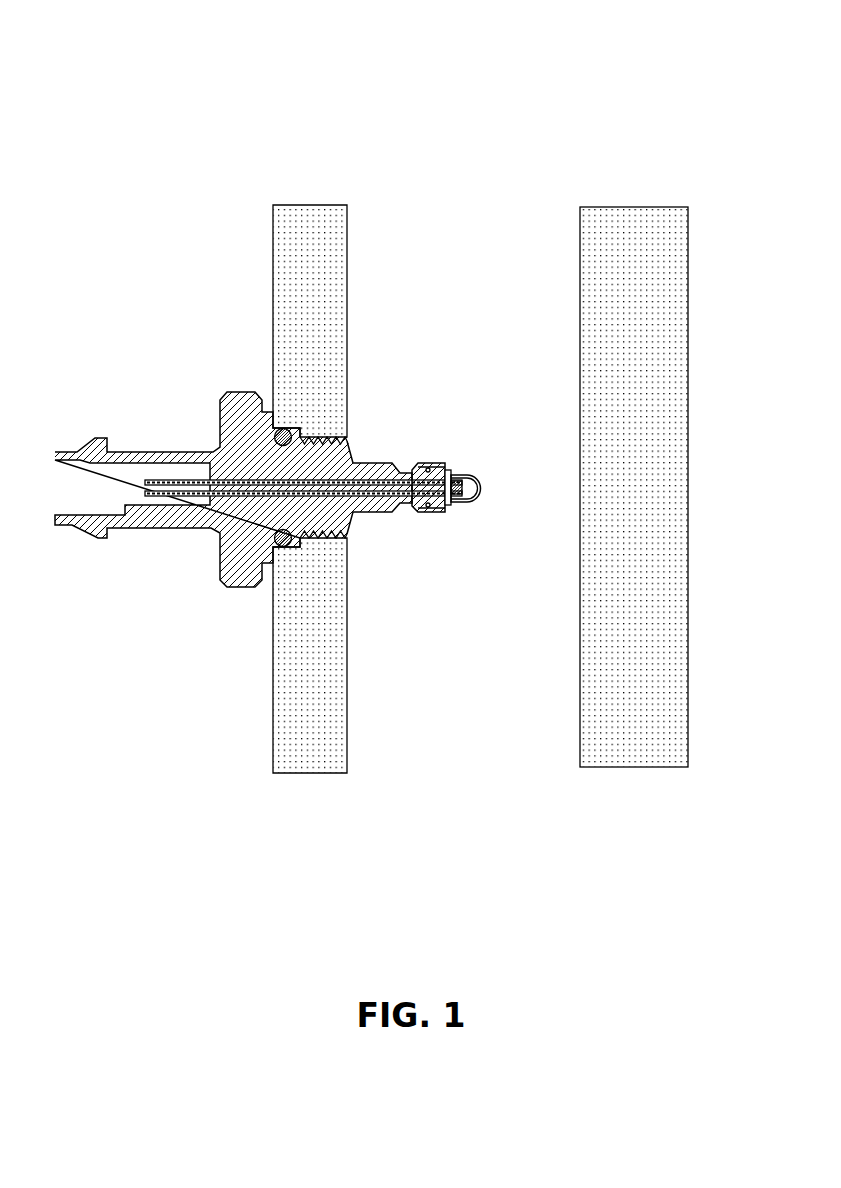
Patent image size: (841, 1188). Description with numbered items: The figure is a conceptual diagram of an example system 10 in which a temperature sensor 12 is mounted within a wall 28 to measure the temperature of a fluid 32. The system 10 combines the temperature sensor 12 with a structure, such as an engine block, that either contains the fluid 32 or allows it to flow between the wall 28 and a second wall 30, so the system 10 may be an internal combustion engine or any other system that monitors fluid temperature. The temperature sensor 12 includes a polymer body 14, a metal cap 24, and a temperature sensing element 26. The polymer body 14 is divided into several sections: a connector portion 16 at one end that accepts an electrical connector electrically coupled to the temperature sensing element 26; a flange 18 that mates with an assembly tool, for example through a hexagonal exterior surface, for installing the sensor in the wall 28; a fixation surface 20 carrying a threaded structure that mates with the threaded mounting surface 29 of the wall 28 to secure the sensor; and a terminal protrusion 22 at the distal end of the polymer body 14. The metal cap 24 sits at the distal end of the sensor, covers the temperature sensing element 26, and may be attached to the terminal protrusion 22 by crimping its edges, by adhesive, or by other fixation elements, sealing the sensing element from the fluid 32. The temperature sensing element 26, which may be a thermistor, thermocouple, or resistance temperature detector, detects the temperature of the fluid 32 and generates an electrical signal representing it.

The system 10 is at (147, 132).
The temperature sensor 12 is at (57, 413).
The polymer body 14 is at (200, 450).
The connector portion 16 is at (143, 531).
The flange 18 is at (240, 592).
The fixation surface 20 is at (349, 454).
The terminal protrusion 22 is at (380, 517).
The metal cap 24 is at (466, 505).
The temperature sensing element 26 is at (462, 485).
The wall 28 is at (273, 255).
The mounting surface 29 is at (333, 434).
The wall 30 is at (688, 306).
The fluid 32 is at (478, 353).